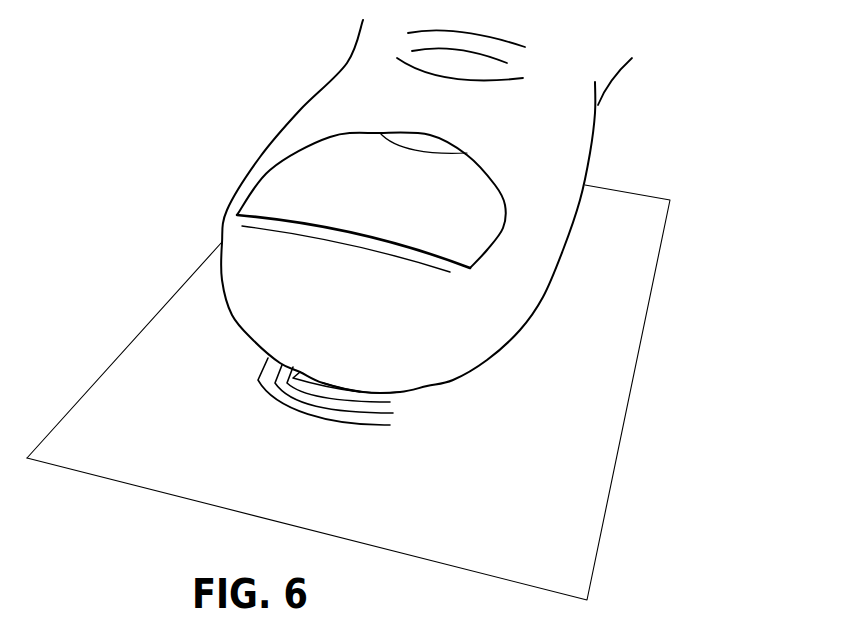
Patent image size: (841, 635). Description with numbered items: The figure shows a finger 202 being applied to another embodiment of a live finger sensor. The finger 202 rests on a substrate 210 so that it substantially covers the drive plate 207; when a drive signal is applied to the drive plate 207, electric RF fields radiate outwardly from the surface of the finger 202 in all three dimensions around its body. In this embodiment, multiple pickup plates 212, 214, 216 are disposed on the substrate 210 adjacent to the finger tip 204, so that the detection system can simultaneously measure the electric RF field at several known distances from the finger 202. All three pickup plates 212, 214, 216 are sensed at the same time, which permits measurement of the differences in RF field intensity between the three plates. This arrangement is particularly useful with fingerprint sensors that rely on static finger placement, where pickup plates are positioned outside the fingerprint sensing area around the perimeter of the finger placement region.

The finger 202 is at (547, 70).
The finger tip 204 is at (310, 357).
The drive plate 207 is at (398, 389).
The substrate 210 is at (667, 230).
The pickup plate 212 is at (398, 427).
The pickup plate 214 is at (398, 414).
The pickup plate 216 is at (398, 402).